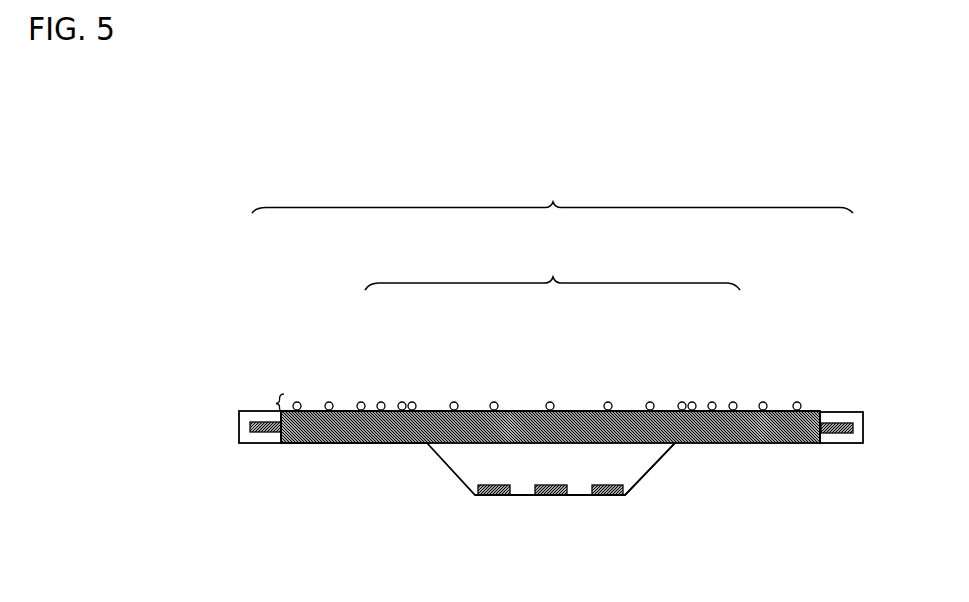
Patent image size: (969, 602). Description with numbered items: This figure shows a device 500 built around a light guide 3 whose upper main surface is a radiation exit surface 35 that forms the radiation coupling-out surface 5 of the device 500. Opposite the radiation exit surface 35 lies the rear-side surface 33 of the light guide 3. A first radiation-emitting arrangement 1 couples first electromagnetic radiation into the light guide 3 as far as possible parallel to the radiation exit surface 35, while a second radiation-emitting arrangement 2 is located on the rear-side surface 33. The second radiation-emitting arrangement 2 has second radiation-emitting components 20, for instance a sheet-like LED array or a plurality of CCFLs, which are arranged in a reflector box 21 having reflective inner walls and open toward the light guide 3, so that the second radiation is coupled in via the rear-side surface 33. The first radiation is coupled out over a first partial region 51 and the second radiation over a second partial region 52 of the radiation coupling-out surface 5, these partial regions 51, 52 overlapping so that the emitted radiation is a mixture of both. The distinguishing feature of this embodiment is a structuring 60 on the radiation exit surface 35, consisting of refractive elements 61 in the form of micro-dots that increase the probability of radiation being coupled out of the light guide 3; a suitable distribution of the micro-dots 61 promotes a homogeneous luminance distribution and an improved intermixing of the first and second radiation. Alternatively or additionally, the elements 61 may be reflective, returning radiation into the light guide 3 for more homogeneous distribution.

The device 500 is at (385, 118).
The first partial region 51 is at (552, 197).
The second partial region 52 is at (552, 268).
The first radiation-emitting arrangement 1 is at (240, 412).
The structuring 60 is at (270, 398).
The light guide 3 is at (318, 423).
The refractive elements 61 is at (383, 401).
The radiation exit surface 35 is at (520, 410).
The radiation coupling-out surface 5 is at (670, 410).
The rear-side surface 33 is at (295, 443).
The second radiation-emitting arrangement 2 is at (513, 477).
The second radiation-emitting components 20 is at (612, 497).
The reflector box 21 is at (653, 468).